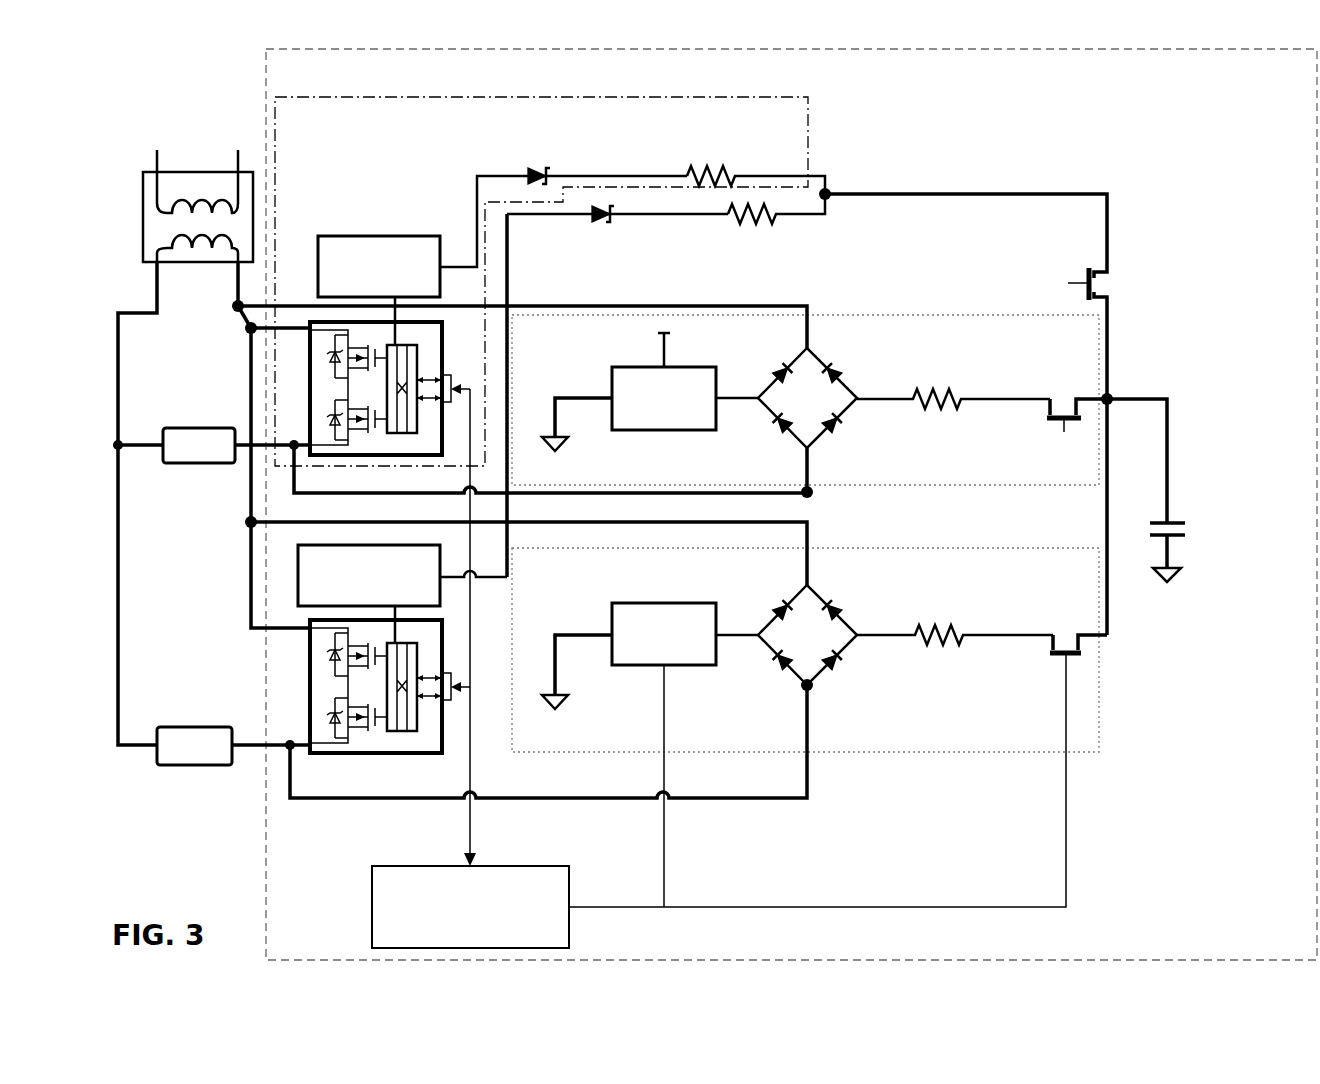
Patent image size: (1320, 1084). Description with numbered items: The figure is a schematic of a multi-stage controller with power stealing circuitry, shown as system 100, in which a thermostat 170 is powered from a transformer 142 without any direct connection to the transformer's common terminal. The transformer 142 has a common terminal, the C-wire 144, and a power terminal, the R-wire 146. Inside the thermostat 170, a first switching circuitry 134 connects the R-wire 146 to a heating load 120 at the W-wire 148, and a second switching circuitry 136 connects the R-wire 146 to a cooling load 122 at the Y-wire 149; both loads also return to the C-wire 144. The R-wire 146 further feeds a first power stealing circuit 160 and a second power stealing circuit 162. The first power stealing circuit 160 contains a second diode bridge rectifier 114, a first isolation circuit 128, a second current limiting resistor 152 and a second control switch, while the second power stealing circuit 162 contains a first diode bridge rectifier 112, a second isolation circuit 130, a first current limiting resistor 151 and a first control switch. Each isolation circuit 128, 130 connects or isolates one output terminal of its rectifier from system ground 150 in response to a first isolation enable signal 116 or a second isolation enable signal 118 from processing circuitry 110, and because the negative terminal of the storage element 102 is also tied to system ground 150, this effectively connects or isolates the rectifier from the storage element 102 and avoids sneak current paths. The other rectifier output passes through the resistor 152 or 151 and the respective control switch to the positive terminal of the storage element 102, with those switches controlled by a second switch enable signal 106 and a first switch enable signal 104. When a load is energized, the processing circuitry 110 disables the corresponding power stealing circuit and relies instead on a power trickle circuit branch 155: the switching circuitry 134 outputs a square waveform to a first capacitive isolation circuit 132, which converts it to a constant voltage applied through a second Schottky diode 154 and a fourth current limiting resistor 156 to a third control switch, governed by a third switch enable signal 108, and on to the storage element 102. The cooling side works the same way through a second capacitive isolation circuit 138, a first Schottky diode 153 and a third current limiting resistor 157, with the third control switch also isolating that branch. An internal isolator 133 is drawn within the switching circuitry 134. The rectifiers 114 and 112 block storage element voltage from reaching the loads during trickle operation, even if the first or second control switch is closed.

The system 100 is at (174, 86).
The storage element 102 is at (1198, 487).
The S1_EN 104 is at (838, 754).
The S2_EN 106 is at (1065, 425).
The S3_EN 108 is at (981, 414).
The processing circuitry 110 is at (470, 668).
The diode bridge rectifier DB1 112 is at (826, 625).
The diode bridge rectifier DB2 114 is at (826, 391).
The IS1_EN 116 is at (700, 341).
The IS2_EN 118 is at (710, 786).
The load 120 is at (199, 462).
The load 122 is at (194, 760).
The isolation circuit 128 is at (667, 438).
The isolation circuit 130 is at (668, 598).
The capacitive isolation circuit 132 is at (377, 230).
The isolator 133 is at (404, 442).
The switching circuitry 134 is at (316, 405).
The switching circuitry 136 is at (298, 670).
The capacitive isolation circuit 138 is at (292, 578).
The transformer 142 is at (137, 187).
The C-wire 144 is at (136, 503).
The R-wire 146 is at (500, 445).
The W-wire 148 is at (524, 445).
The Y-wire 149 is at (522, 738).
The system ground 150 is at (861, 589).
The current limiting resistor R1 151 is at (955, 630).
The current limiting resistor R2 152 is at (953, 399).
The Schottky diode D1 153 is at (617, 391).
The Schottky diode D2 154 is at (605, 149).
The power trickle circuit branch 155 is at (463, 95).
The current limiting resistor R4 156 is at (752, 149).
The current limiting resistor R3 157 is at (767, 229).
The power stealing circuit 160 is at (942, 313).
The power stealing circuit 162 is at (957, 755).
The thermostat 170 is at (791, 504).